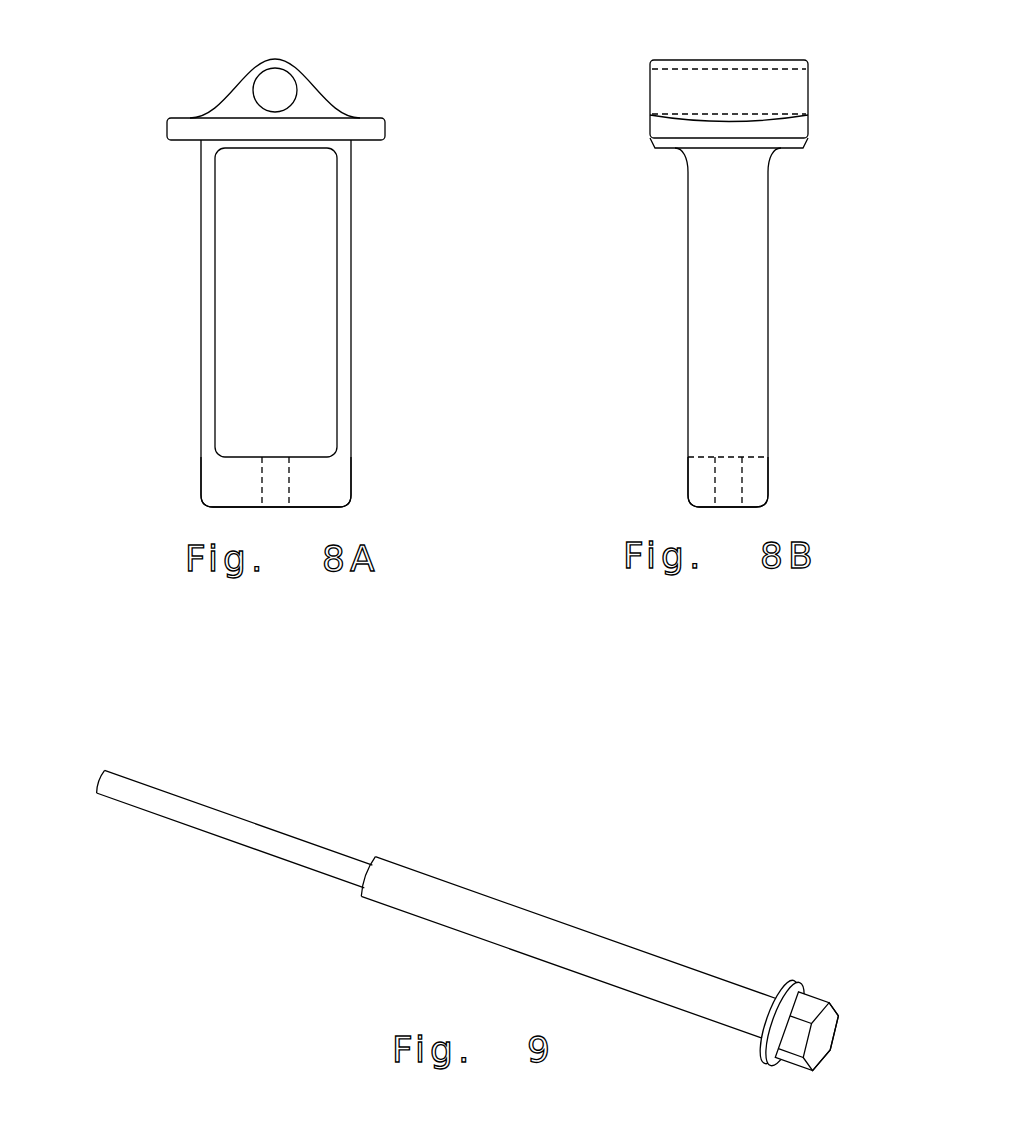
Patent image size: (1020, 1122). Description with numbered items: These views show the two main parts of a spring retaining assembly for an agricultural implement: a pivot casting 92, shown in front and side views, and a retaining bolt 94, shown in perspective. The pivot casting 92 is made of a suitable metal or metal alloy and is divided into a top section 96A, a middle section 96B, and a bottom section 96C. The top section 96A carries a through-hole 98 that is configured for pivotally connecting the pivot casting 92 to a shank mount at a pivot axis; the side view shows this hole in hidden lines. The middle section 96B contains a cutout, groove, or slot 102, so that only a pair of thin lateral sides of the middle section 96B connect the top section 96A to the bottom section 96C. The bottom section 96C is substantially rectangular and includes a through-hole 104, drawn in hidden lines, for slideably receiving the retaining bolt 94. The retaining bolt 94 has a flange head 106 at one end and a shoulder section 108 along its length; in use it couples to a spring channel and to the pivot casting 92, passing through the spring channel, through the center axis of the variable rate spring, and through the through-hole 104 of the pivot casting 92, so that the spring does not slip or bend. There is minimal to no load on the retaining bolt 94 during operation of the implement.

In FIG. 8A, the pivot casting 92 is at (249, 263).
In FIG. 8B, the pivot casting 92 is at (705, 253).
In FIG. 9, the retaining bolt 94 is at (490, 920).
In FIG. 8A, the top section 96A is at (265, 80).
In FIG. 8B, the top section 96A is at (700, 74).
In FIG. 8A, the middle section 96B is at (269, 323).
In FIG. 8B, the middle section 96B is at (708, 332).
In FIG. 8A, the bottom section 96C is at (269, 481).
In FIG. 8B, the bottom section 96C is at (727, 475).
In FIG. 8A, the through-hole 98 is at (291, 89).
In FIG. 8B, the through-hole 98 is at (782, 65).
In FIG. 8A, the slot 102 is at (333, 264).
In FIG. 8A, the through-hole 104 is at (292, 480).
In FIG. 8B, the through-hole 104 is at (743, 482).
In FIG. 9, the flange head 106 is at (812, 1010).
In FIG. 9, the shoulder section 108 is at (488, 928).